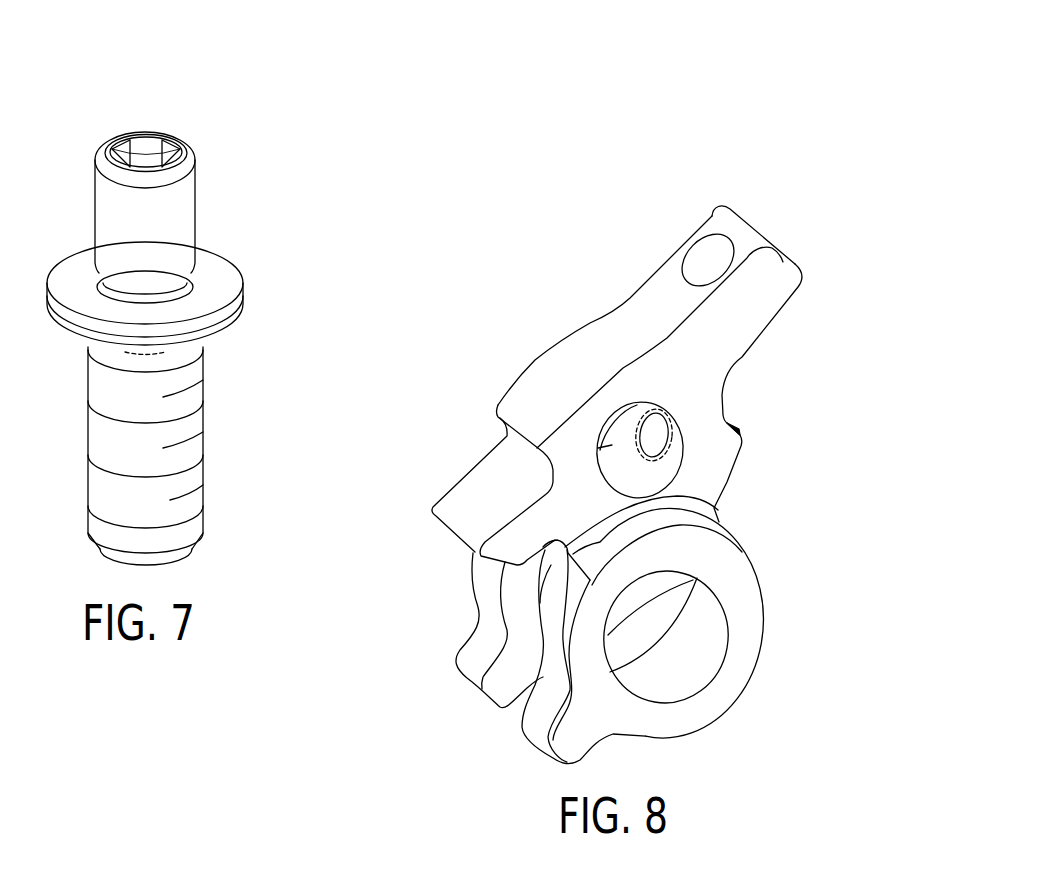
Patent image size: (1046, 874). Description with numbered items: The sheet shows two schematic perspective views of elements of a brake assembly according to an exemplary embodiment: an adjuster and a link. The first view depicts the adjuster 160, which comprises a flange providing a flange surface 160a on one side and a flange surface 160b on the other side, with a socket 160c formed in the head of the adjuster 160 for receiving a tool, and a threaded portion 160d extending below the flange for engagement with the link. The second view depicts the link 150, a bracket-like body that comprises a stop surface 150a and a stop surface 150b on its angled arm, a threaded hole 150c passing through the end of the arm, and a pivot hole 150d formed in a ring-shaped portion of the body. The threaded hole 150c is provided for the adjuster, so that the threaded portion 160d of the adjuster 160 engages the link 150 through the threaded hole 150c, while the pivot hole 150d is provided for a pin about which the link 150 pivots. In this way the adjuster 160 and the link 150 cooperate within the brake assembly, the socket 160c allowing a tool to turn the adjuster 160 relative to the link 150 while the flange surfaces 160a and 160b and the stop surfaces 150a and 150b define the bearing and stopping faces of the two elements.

In FIG. 7, the adjuster 160 is at (185, 217).
In FIG. 7, the flange surface 160a is at (212, 275).
In FIG. 7, the flange surface 160b is at (225, 335).
In FIG. 7, the socket 160c is at (145, 155).
In FIG. 7, the threaded portion 160d is at (197, 442).
In FIG. 8, the link 150 is at (710, 363).
In FIG. 8, the stop surface 150a is at (533, 388).
In FIG. 8, the stop surface 150b is at (668, 298).
In FIG. 8, the threaded hole 150c is at (705, 255).
In FIG. 8, the pivot hole 150d is at (653, 470).